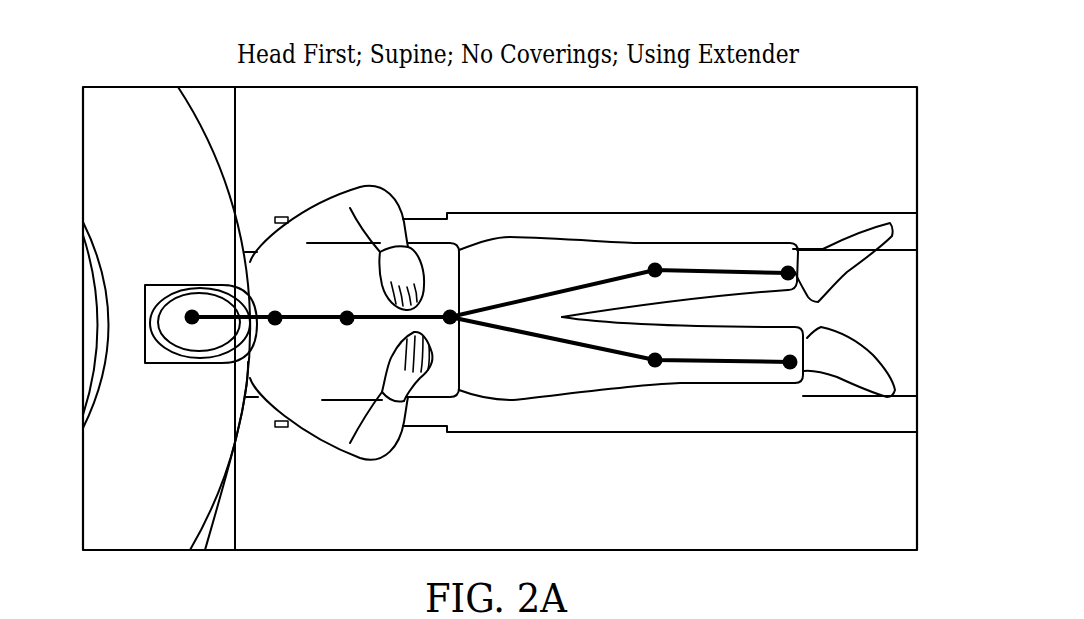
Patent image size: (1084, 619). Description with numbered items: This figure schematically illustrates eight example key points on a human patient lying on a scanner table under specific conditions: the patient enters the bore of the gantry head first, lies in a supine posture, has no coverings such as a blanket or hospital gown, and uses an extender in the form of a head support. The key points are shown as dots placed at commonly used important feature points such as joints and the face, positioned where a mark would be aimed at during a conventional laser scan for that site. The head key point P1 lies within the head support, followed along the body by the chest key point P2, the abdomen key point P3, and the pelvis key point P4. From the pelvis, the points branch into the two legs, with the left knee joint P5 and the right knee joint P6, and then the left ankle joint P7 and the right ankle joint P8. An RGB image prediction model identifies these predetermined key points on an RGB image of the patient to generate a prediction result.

The head key point P1 is at (192, 305).
The chest key point P2 is at (274, 305).
The abdomen key point P3 is at (347, 330).
The pelvis key point P4 is at (455, 305).
The left knee joint key point P5 is at (657, 260).
The right knee joint key point P6 is at (657, 372).
The left ankle joint key point P7 is at (792, 262).
The right ankle joint key point P8 is at (789, 374).